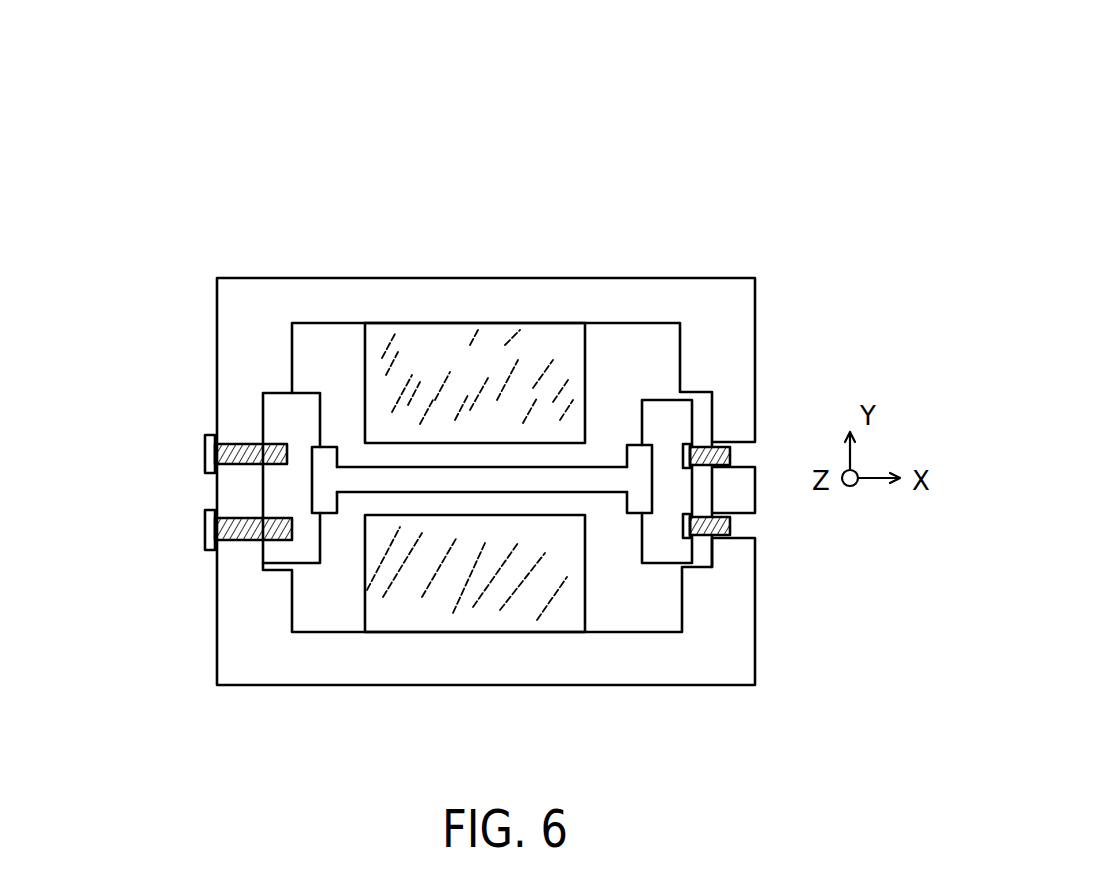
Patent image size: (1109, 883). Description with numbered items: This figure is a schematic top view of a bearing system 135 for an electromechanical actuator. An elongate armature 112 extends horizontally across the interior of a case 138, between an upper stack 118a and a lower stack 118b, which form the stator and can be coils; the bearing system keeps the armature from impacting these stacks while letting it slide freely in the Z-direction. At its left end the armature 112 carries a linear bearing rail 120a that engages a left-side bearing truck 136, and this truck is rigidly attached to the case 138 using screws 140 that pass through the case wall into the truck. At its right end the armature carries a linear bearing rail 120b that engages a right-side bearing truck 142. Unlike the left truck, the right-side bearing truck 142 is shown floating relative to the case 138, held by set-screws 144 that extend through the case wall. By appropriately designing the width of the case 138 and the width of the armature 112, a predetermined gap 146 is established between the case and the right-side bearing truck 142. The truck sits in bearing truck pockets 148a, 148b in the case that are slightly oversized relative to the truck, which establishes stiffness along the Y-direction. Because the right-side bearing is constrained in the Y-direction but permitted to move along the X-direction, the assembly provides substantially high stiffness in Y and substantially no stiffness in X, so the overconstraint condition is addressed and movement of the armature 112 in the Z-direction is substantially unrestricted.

The bearing system 135 is at (527, 136).
The case 138 is at (533, 297).
The left-side bearing truck 136 is at (286, 417).
The right-side bearing truck 142 is at (672, 435).
The armature 112 is at (475, 480).
The linear bearing rail 120a is at (333, 460).
The linear bearing rail 120b is at (638, 457).
The stack 118a is at (418, 360).
The stack 118b is at (427, 603).
The screws 140 is at (208, 528).
The set-screws 144 is at (732, 530).
The gap 146 is at (704, 424).
The bearing truck pocket 148a is at (687, 388).
The bearing truck pocket 148b is at (672, 578).